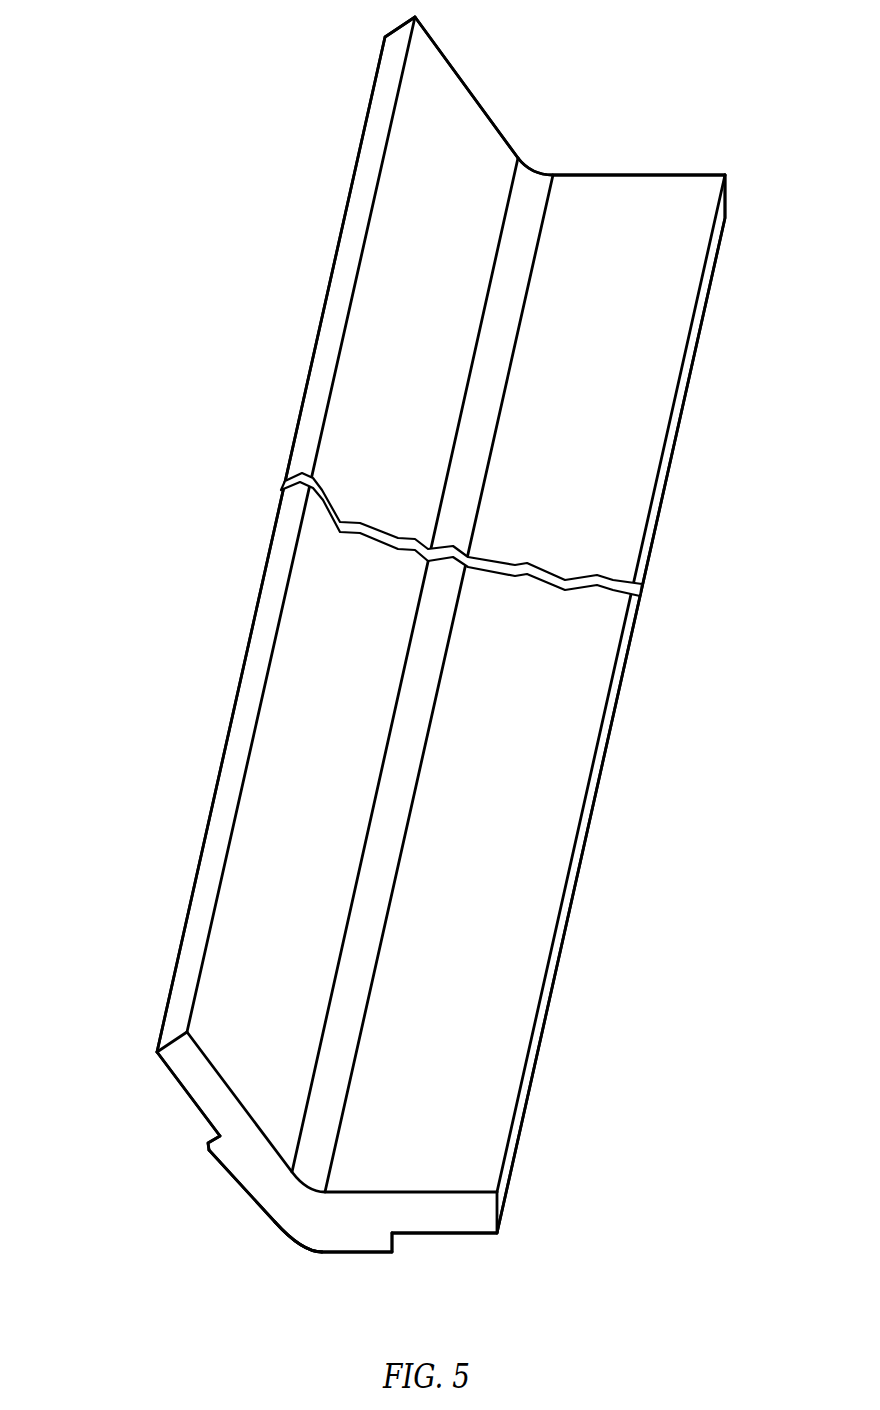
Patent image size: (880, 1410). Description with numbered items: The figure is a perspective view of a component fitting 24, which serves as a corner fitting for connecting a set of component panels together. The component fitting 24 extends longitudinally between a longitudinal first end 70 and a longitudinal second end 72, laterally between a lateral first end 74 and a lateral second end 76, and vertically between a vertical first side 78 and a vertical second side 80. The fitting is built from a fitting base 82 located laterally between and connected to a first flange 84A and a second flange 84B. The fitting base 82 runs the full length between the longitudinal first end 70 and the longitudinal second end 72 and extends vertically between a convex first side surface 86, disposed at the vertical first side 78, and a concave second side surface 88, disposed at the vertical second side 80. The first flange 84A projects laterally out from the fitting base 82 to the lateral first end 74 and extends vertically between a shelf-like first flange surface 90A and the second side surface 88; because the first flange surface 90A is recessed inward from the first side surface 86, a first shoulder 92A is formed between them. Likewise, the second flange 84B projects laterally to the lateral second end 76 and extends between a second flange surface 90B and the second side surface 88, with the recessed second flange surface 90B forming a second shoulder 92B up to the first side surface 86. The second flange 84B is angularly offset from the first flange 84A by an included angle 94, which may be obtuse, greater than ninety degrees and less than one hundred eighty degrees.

The component fitting 24 is at (462, 634).
The longitudinal first end 70 is at (238, 1189).
The longitudinal second end 72 is at (480, 98).
The lateral first end 74 is at (227, 800).
The lateral second end 76 is at (562, 936).
The vertical first side 78 is at (320, 1252).
The vertical second side 80 is at (343, 1190).
The fitting base 82 is at (254, 1241).
The first flange 84A is at (160, 1088).
The second flange 84B is at (461, 1255).
The first side surface 86 is at (320, 1252).
The second side surface 88 is at (488, 1107).
The first flange surface 90A is at (192, 1103).
The second flange surface 90B is at (427, 1236).
The first shoulder 92A is at (210, 1140).
The second shoulder 92B is at (398, 1237).
The included angle 94 is at (593, 163).